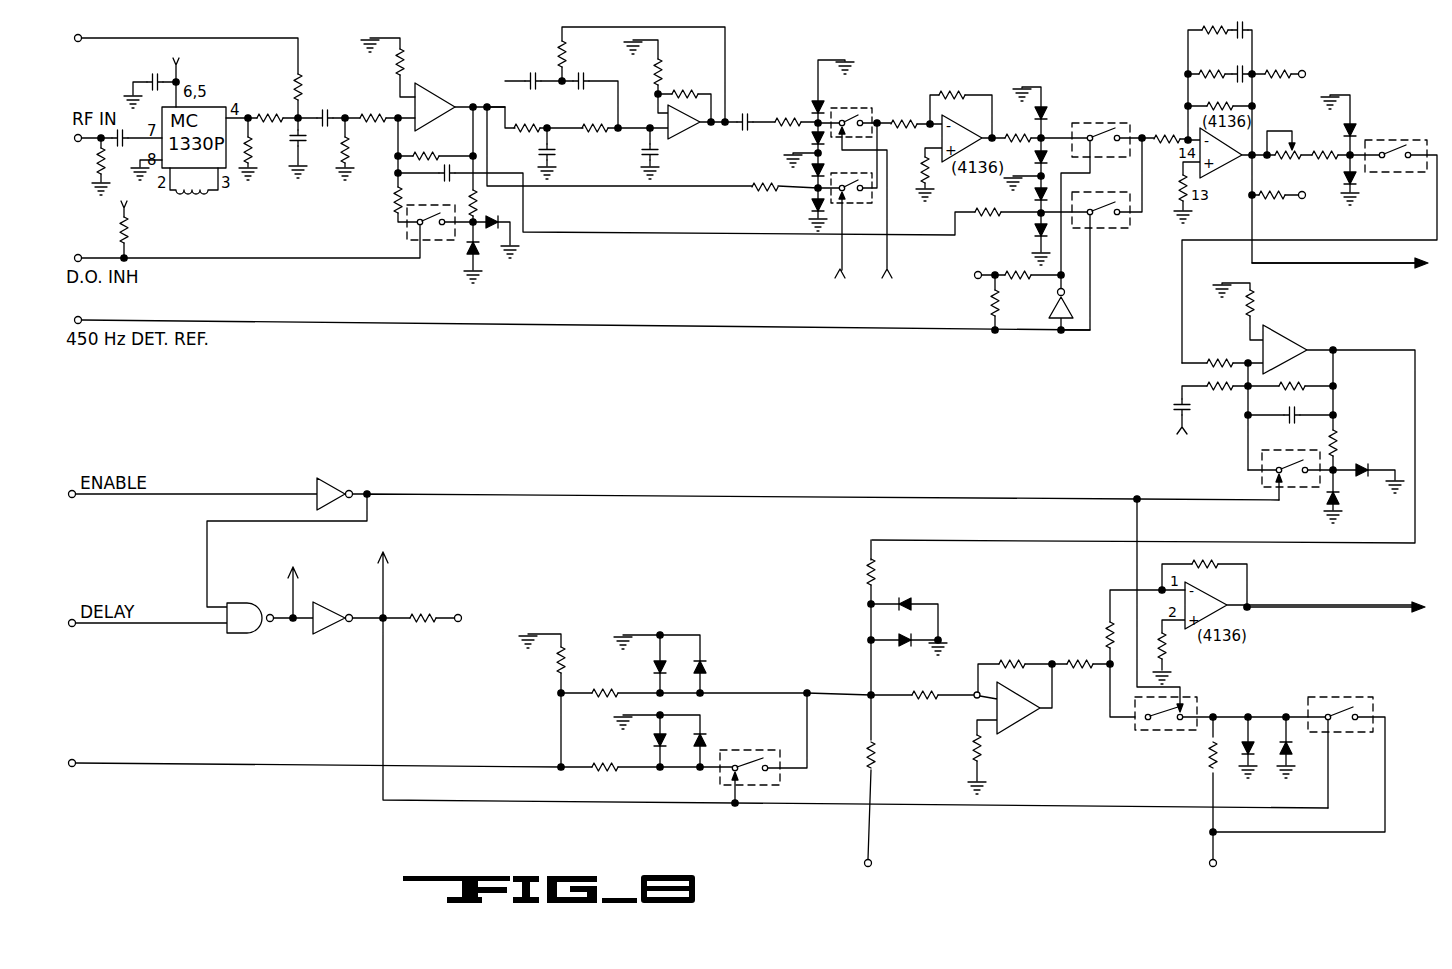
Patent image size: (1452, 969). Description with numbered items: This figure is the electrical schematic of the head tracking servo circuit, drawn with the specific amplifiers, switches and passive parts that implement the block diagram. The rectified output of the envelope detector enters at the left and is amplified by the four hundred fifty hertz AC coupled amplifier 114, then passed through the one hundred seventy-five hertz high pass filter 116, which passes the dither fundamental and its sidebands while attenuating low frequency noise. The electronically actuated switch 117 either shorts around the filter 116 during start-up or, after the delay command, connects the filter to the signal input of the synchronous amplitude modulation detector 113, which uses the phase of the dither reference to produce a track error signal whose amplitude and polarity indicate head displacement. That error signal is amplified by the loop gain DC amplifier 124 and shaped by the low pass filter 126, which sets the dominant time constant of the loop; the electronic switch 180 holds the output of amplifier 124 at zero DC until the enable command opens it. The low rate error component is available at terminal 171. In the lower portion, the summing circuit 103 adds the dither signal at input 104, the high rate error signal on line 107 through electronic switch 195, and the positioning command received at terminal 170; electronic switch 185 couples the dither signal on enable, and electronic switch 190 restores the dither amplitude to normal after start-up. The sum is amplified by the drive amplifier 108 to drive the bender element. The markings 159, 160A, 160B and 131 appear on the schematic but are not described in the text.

The summing circuit 103 is at (1058, 625).
The input of summing circuit 104 is at (1216, 853).
The high rate error correction signal input 107 is at (232, 768).
The drive amplifier 108 is at (1336, 597).
The synchronous amplitude modulation detector 113 is at (1128, 88).
The 450 Hz AC coupled amplifier 114 is at (724, 173).
The 175 Hz high pass filter 116 is at (652, 150).
The electronically actuated switch 117 is at (896, 178).
The loop gain DC amplifier 124 is at (1378, 344).
The low pass filter 126 is at (1390, 422).
The connection to stage 131 is at (1338, 288).
The analog switch 159 is at (265, 223).
The control signal line 160A is at (558, 450).
The control signal line 160B is at (633, 450).
The terminal 170 is at (874, 852).
The terminal 171 is at (1287, 207).
The electronic switch 180 is at (1298, 490).
The electronic switch 185 is at (1230, 729).
The electronic switch 190 is at (1340, 697).
The electronic switch 195 is at (750, 750).